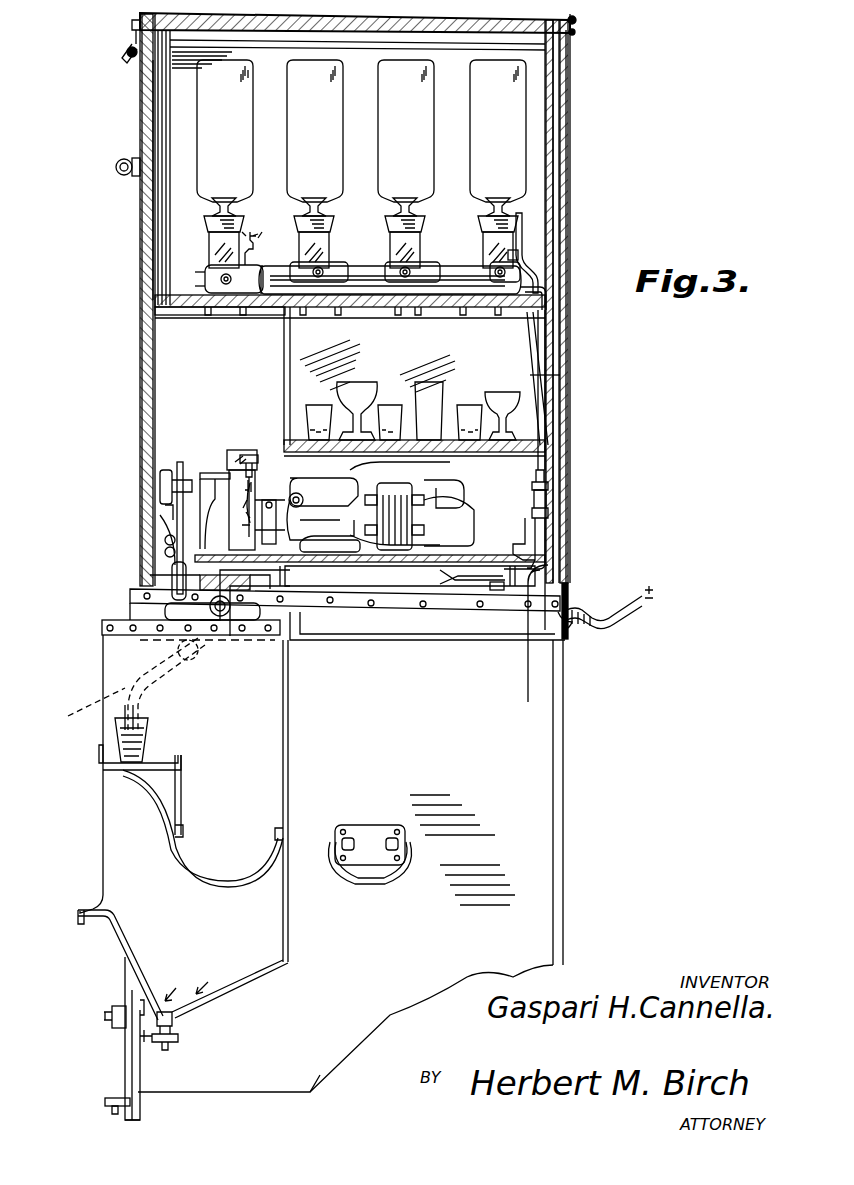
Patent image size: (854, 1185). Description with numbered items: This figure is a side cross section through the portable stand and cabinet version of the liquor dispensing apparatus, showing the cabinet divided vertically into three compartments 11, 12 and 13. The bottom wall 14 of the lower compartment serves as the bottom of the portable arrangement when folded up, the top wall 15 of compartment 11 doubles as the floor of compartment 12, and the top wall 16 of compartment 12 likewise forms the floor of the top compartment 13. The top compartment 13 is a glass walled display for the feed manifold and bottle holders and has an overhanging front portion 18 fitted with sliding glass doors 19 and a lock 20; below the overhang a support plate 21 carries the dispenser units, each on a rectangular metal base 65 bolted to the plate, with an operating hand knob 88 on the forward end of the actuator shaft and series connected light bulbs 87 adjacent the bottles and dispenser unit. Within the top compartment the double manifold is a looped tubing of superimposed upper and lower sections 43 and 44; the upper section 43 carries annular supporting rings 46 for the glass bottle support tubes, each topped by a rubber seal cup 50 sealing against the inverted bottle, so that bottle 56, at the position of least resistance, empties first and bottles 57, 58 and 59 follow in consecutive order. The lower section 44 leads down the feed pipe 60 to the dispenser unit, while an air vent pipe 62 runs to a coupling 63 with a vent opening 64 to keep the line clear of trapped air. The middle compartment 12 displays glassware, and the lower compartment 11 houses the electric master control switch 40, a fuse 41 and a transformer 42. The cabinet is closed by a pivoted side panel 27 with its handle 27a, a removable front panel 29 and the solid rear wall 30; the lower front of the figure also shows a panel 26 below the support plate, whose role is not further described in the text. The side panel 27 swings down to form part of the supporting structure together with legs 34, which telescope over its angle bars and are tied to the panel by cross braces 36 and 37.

The compartment 11 is at (525, 527).
The compartment 12 is at (515, 378).
The top compartment 13 is at (540, 190).
The bottom wall 14 is at (405, 575).
The top wall 15 is at (432, 452).
The top wall 16 is at (440, 312).
The overhanging front portion 18 is at (195, 325).
The sliding glass doors 19 is at (153, 220).
The lock 20 is at (128, 177).
The support plate 21 is at (140, 598).
The drip tray panel 26 is at (288, 705).
The pivoted side panel 27 is at (545, 783).
The handle 27a is at (410, 845).
The removable front panel 29 is at (145, 410).
The rear wall 30 is at (560, 258).
The legs 34 is at (140, 1105).
The cross brace 36 is at (128, 1010).
The cross brace 37 is at (120, 1104).
The electric master control switch 40 is at (262, 468).
The fuse 41 is at (345, 556).
The transformer 42 is at (395, 556).
The upper manifold section 43 is at (340, 292).
The lower manifold section 44 is at (432, 290).
The annular supporting ring 46 is at (205, 270).
The rubber seal cup 50 is at (245, 212).
The bottle 56 is at (223, 142).
The bottle 57 is at (313, 142).
The bottle 58 is at (403, 142).
The bottle 59 is at (493, 142).
The feed pipe 60 is at (545, 335).
The air vent pipe 62 is at (530, 235).
The coupling 63 is at (542, 480).
The vent opening 64 is at (548, 500).
The base 65 is at (248, 620).
The light bulbs 87 is at (258, 243).
The operating hand knob 88 is at (178, 470).